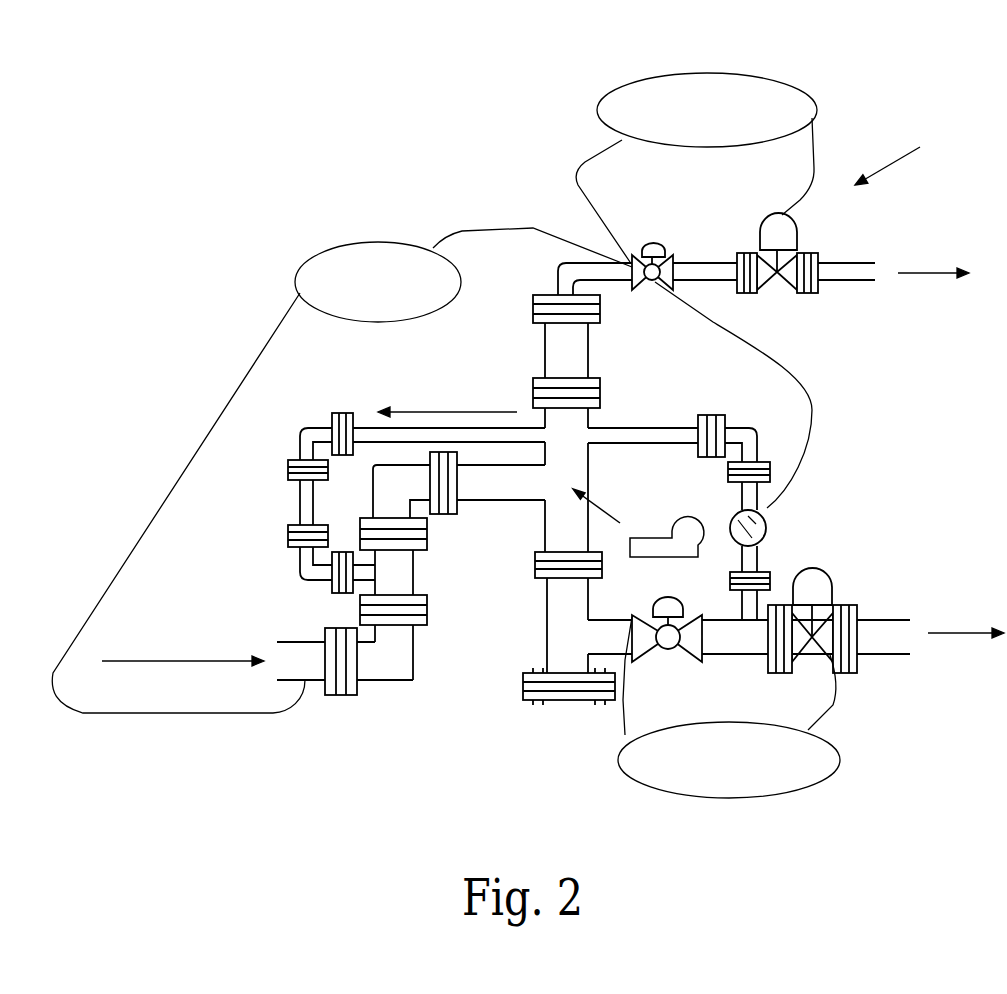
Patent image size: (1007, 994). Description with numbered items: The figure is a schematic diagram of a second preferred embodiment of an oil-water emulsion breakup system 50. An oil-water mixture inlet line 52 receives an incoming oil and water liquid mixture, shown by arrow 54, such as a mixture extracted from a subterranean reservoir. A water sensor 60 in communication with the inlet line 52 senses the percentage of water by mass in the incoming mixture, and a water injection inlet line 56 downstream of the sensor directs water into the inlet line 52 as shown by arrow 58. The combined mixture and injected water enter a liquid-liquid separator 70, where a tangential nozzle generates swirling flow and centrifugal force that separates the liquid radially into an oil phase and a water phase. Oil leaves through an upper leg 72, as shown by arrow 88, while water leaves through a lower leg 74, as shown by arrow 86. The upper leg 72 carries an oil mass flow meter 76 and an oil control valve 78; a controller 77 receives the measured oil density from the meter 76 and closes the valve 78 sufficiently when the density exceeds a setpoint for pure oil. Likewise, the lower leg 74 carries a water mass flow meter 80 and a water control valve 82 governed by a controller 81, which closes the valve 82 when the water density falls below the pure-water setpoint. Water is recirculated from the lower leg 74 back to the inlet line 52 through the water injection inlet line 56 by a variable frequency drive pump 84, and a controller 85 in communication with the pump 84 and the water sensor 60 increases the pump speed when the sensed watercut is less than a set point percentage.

The oil-water emulsion breakup system 50 is at (906, 157).
The oil-water mixture inlet line 52 is at (387, 663).
The arrow 54 is at (177, 660).
The water injection inlet line 56 is at (308, 572).
The arrow 58 is at (460, 410).
The water sensor 60 is at (297, 637).
The liquid-liquid separator 70 is at (650, 542).
The upper leg 72 is at (578, 352).
The lower leg 74 is at (568, 627).
The oil mass flow meter 76 is at (648, 242).
The controller 77 is at (720, 70).
The oil control valve 78 is at (752, 257).
The water mass flow meter 80 is at (690, 640).
The controller 81 is at (755, 802).
The water control valve 82 is at (830, 598).
The pump 84 is at (768, 528).
The controller 85 is at (353, 243).
The arrow 86 is at (958, 630).
The arrow 88 is at (922, 268).